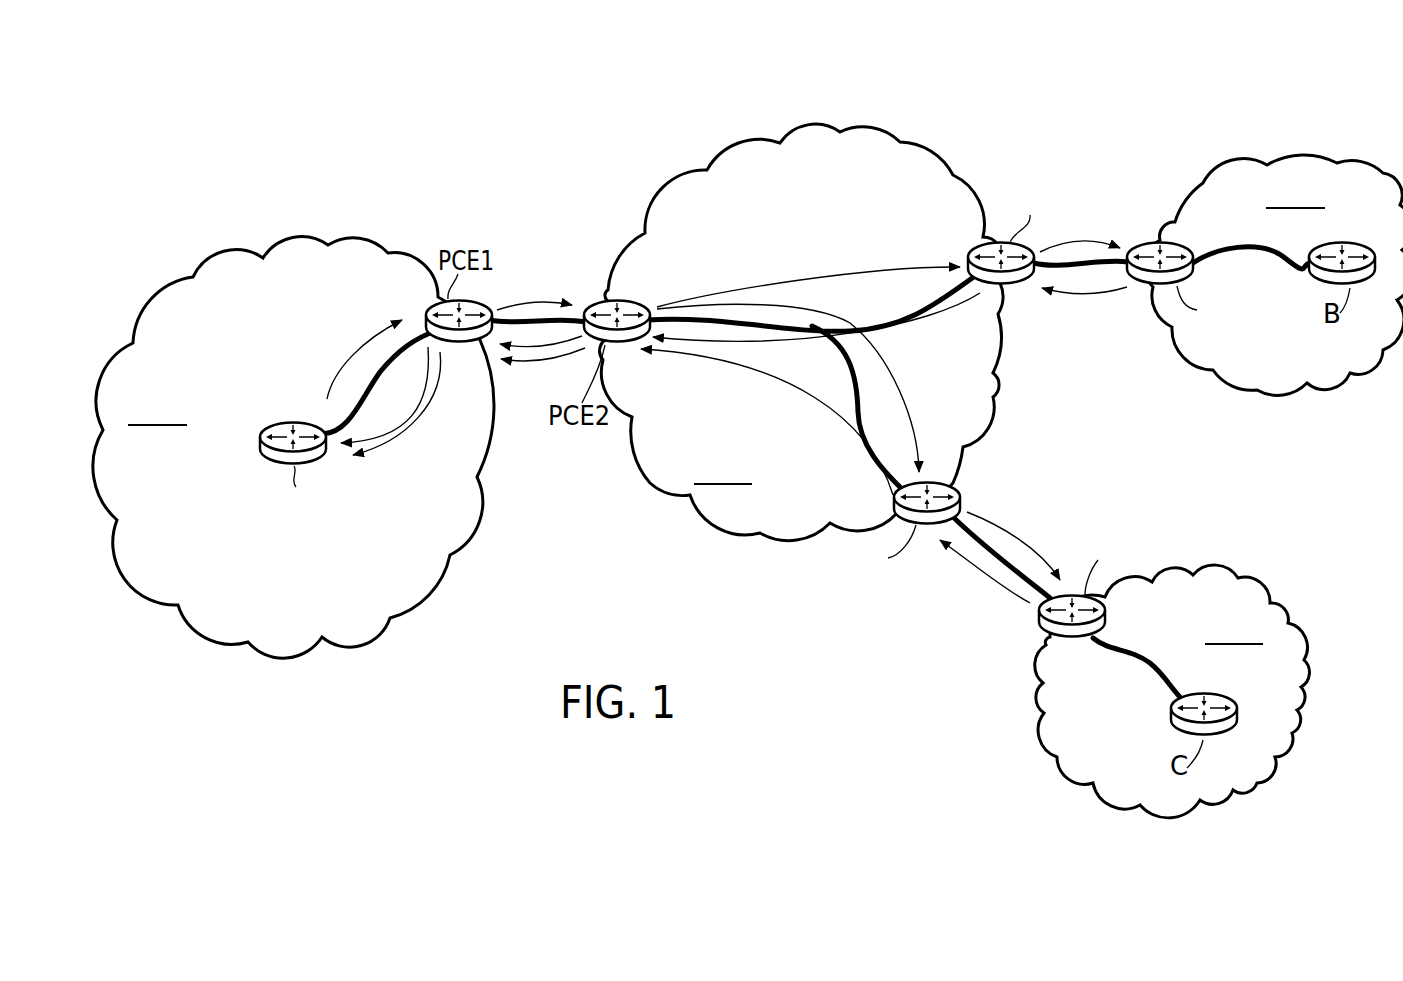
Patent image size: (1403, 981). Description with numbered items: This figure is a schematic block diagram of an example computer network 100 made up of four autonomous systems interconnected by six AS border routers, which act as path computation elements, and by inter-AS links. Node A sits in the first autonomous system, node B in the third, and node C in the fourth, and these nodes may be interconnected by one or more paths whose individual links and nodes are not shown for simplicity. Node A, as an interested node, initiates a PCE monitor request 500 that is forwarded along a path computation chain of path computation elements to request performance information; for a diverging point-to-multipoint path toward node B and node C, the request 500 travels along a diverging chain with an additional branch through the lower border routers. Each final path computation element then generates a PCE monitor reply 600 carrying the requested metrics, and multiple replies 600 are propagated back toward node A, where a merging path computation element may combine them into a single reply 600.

The computer network 100 is at (1132, 80).
The PCE monitor request message 500 is at (321, 356).
The PCE monitor reply message 600 is at (1118, 337).